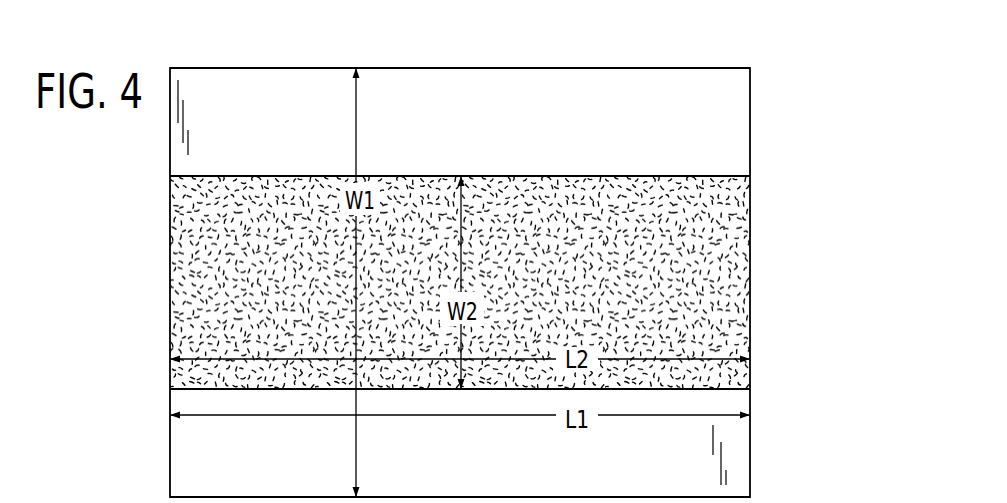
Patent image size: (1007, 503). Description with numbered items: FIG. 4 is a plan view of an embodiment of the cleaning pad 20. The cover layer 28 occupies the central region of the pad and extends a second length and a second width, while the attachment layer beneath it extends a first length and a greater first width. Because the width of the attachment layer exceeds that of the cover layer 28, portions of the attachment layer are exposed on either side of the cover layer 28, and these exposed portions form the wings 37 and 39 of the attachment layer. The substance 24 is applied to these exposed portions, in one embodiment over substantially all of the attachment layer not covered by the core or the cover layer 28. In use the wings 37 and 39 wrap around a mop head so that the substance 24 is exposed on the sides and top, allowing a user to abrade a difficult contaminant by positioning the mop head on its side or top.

The cleaning pad 20 is at (181, 41).
The substance 24 is at (715, 137).
The cover layer 28 is at (727, 317).
The wing 37 is at (583, 85).
The wing 39 is at (186, 450).